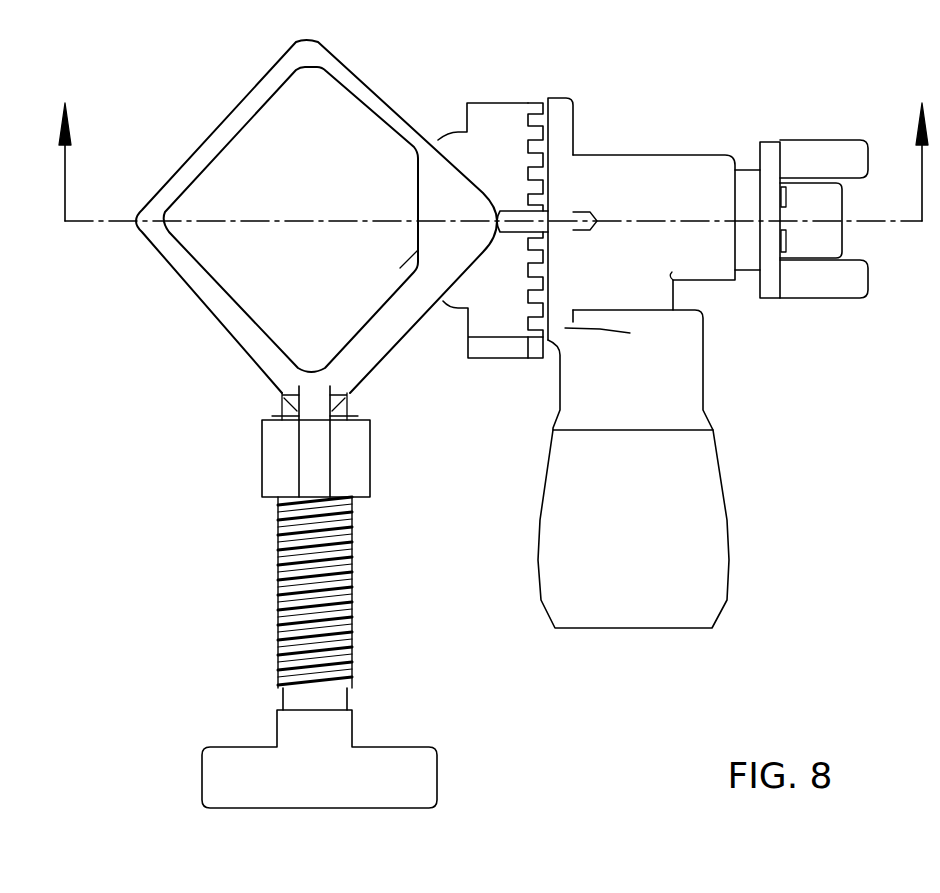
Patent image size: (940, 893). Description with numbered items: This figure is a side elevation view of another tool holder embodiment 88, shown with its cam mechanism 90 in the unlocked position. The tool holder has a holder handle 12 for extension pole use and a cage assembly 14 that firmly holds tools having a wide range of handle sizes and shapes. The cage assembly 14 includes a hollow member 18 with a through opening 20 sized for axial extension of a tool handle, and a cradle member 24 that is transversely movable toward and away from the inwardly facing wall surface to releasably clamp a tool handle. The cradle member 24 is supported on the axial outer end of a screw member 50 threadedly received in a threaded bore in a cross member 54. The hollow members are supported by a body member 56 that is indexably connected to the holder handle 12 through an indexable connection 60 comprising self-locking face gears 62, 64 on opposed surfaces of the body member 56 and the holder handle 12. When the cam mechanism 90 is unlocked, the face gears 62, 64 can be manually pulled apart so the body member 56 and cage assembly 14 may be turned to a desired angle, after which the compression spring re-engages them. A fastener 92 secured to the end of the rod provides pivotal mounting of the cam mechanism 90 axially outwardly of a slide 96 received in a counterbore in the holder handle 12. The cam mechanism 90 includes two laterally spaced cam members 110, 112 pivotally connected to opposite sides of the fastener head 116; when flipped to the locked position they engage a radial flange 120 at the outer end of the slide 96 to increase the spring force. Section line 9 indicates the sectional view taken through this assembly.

The section line 9- 9 is at (493, 147).
The holder handle 12 is at (713, 557).
The cage assembly 14 is at (313, 259).
The hollow member 18 is at (360, 77).
The through opening 20 is at (274, 222).
The cradle member 24 is at (364, 304).
The screw member 50 is at (278, 590).
The cross member 54 is at (270, 460).
The body member 56 is at (548, 219).
The indexable connection 60 is at (539, 88).
The self-locking face gear 62 is at (540, 147).
The self-locking face gear 64 is at (531, 278).
The tool holder embodiment 88 is at (671, 186).
The cam mechanism 90 is at (847, 218).
The fastener 92 is at (778, 205).
The slide 96 is at (747, 262).
The cam member 110 is at (832, 290).
The cam member 112 is at (828, 150).
The fastener head 116 is at (838, 237).
The radial flange 120 is at (769, 288).